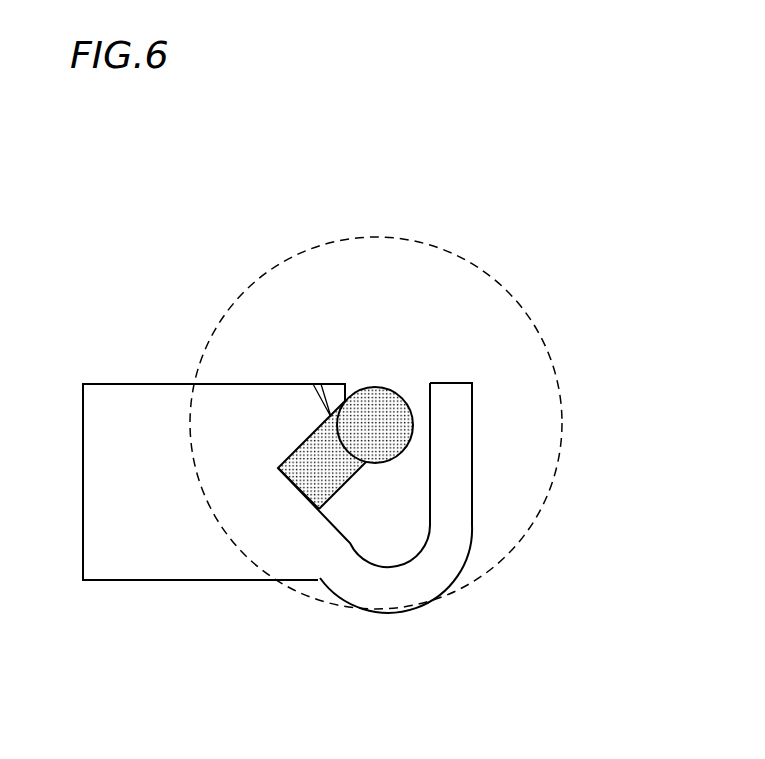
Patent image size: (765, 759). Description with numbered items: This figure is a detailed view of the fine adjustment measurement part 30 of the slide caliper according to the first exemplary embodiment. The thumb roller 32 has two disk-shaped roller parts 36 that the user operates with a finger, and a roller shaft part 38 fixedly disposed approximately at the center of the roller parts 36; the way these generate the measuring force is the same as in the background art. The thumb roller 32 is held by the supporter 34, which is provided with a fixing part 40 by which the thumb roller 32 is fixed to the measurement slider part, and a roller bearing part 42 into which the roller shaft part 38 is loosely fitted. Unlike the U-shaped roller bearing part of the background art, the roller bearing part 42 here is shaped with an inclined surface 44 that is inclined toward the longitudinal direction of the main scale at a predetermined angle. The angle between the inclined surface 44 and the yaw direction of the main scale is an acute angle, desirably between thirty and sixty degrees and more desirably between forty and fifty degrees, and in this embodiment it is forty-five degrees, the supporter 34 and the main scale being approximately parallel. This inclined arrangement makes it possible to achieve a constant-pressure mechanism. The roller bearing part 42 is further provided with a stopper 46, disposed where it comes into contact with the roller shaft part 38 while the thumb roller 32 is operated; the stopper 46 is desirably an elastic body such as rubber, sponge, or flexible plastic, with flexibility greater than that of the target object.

The fine adjustment measurement part 30 is at (300, 212).
The thumb roller 32 is at (516, 304).
The supporter 34 is at (110, 382).
The roller part 36 is at (512, 412).
The roller shaft part 38 is at (377, 387).
The fixing part 40 is at (130, 563).
The roller bearing part 42 is at (408, 507).
The inclined surface 44 is at (293, 455).
The stopper 46 is at (343, 487).